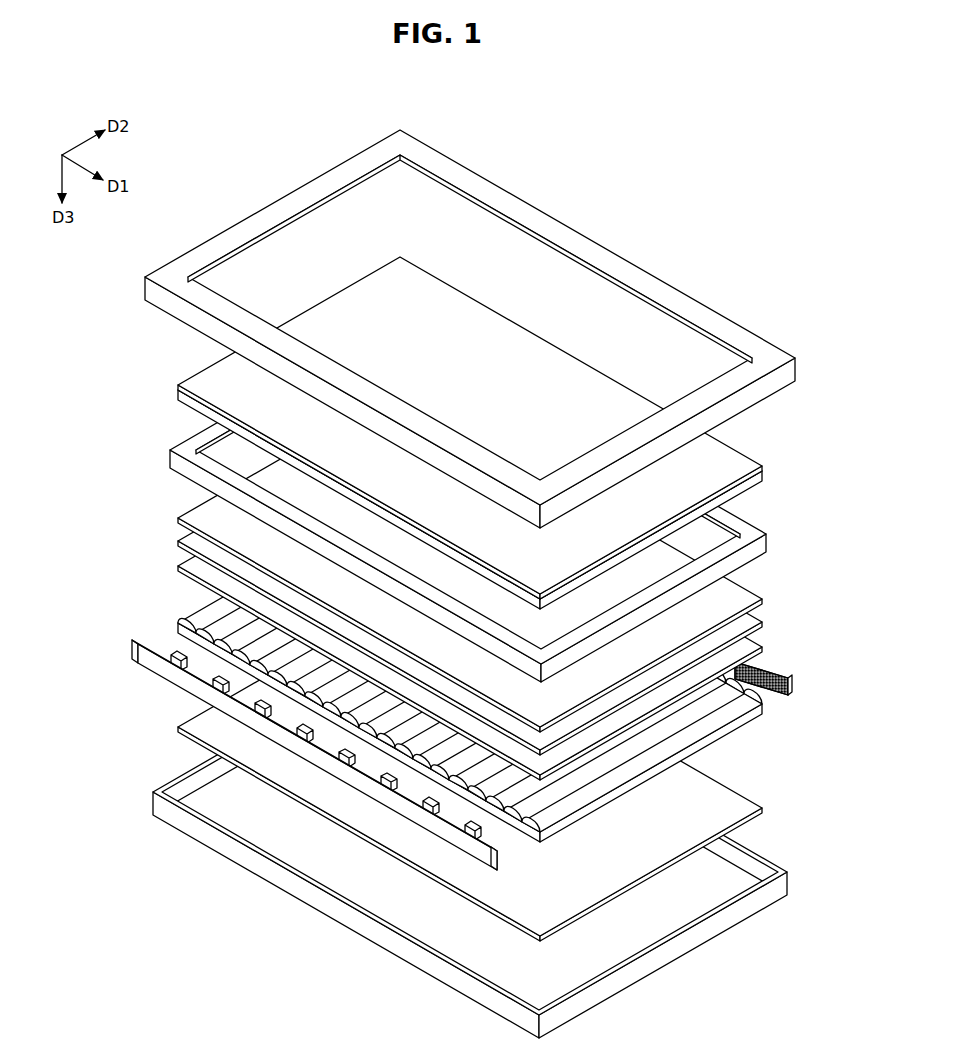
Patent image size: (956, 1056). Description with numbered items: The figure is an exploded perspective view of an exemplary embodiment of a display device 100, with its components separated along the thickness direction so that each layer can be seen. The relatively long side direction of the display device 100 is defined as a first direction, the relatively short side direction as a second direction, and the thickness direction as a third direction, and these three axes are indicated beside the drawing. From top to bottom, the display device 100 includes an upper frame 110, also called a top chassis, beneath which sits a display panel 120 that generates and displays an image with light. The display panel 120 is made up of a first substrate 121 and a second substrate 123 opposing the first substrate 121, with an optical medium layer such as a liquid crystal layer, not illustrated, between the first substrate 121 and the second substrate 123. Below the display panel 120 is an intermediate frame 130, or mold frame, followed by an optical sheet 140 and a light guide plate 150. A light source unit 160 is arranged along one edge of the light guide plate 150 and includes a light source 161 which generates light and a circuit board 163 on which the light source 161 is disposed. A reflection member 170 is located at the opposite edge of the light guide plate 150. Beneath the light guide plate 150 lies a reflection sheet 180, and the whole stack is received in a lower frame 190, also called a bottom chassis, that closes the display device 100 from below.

The display device 100 is at (257, 158).
The upper frame 110 is at (145, 292).
The display panel 120 is at (412, 433).
The first substrate 121 is at (193, 407).
The second substrate 123 is at (200, 375).
The intermediate frame 130 is at (170, 460).
The optical sheet 140 is at (175, 518).
The light guide plate 150 is at (200, 612).
The light source unit 160 is at (261, 755).
The light source 161 is at (134, 661).
The circuit board 163 is at (170, 685).
The reflection member 170 is at (790, 690).
The reflection sheet 180 is at (720, 788).
The lower frame 190 is at (783, 888).